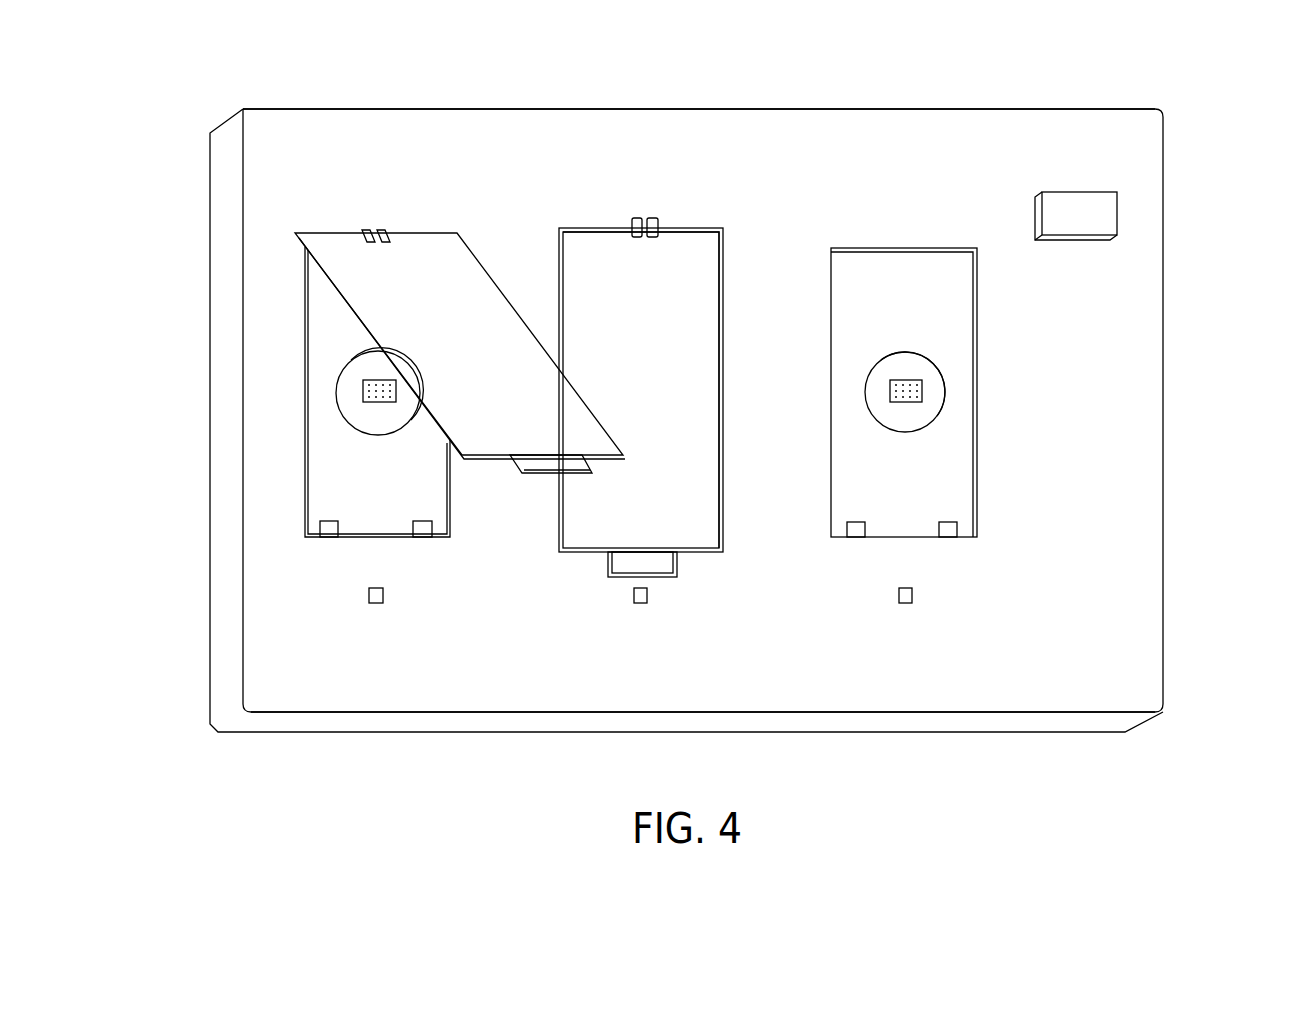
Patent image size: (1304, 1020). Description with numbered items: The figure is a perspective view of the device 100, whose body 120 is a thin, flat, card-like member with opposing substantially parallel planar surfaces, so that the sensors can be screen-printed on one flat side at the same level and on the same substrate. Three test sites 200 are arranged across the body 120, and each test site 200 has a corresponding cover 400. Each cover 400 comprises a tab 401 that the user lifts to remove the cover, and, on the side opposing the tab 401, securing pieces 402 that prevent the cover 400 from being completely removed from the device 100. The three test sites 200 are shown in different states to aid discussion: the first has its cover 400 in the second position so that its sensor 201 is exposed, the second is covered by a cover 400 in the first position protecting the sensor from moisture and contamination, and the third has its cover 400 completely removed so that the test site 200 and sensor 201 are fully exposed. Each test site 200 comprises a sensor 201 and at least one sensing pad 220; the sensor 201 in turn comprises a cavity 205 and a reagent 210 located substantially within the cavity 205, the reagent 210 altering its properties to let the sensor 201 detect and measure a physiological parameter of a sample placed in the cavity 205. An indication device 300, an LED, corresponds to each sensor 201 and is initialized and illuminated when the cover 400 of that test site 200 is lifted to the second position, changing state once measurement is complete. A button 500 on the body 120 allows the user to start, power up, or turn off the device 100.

The device 100 is at (747, 108).
The body 120 is at (933, 182).
The test site 200 is at (321, 348).
The sensor 201 is at (355, 353).
The cavity 205 is at (383, 427).
The reagent 210 is at (362, 393).
The sensing pad 220 is at (420, 538).
The indication device 300 is at (373, 604).
The cover 400 is at (422, 265).
The tab 401 is at (540, 474).
The securing piece 402 is at (379, 230).
The button 500 is at (1110, 208).